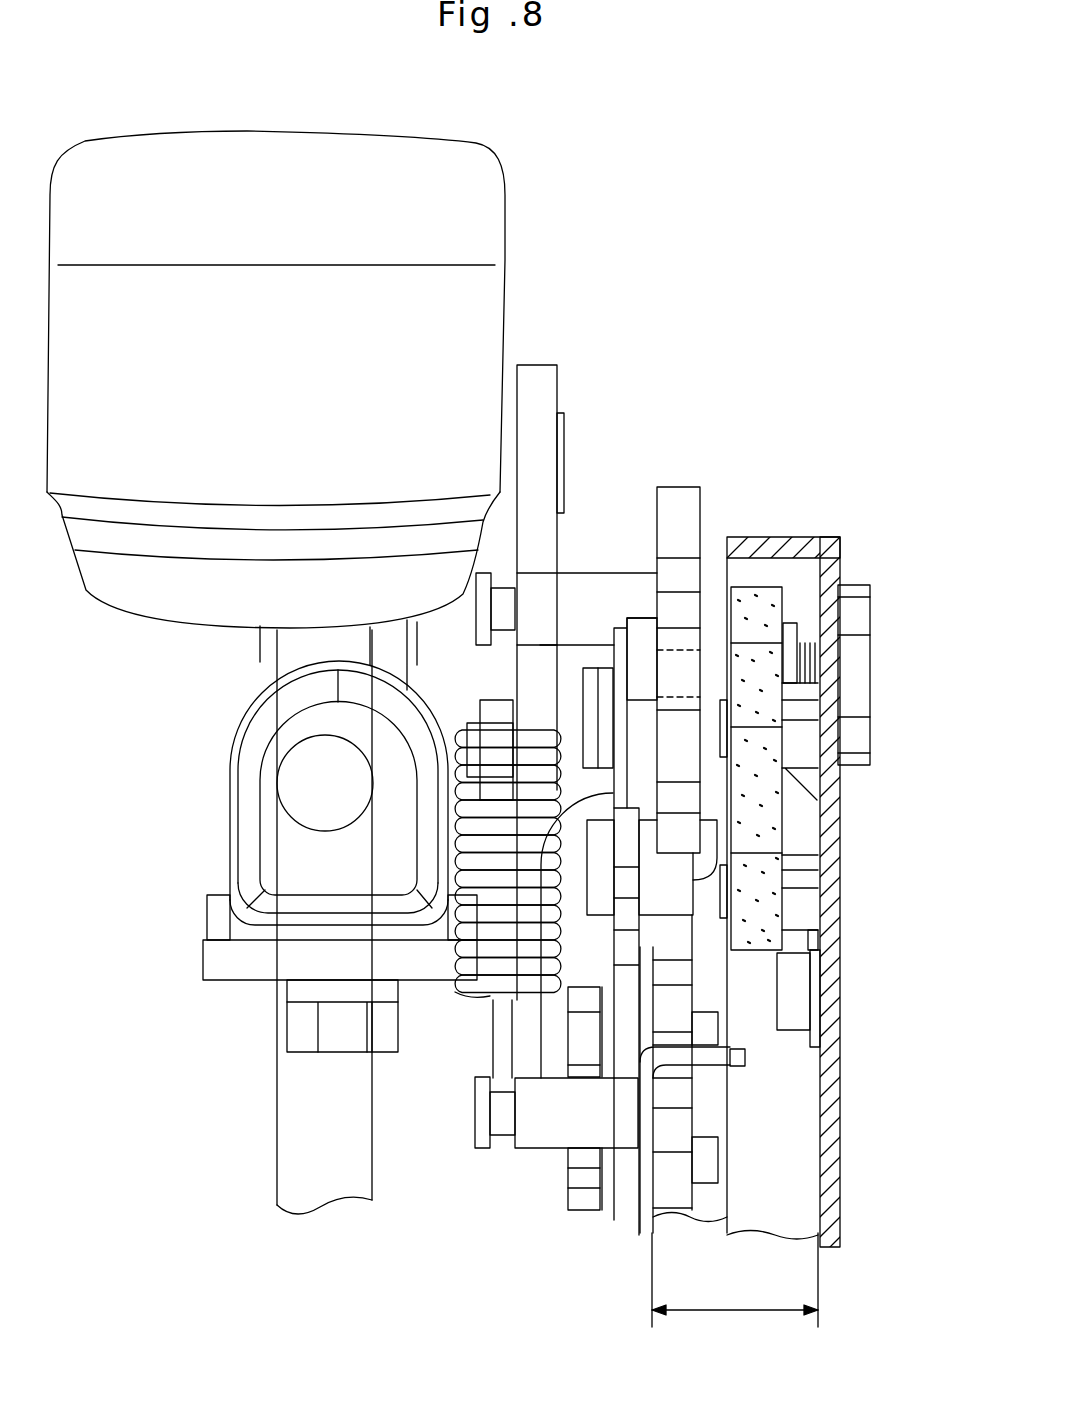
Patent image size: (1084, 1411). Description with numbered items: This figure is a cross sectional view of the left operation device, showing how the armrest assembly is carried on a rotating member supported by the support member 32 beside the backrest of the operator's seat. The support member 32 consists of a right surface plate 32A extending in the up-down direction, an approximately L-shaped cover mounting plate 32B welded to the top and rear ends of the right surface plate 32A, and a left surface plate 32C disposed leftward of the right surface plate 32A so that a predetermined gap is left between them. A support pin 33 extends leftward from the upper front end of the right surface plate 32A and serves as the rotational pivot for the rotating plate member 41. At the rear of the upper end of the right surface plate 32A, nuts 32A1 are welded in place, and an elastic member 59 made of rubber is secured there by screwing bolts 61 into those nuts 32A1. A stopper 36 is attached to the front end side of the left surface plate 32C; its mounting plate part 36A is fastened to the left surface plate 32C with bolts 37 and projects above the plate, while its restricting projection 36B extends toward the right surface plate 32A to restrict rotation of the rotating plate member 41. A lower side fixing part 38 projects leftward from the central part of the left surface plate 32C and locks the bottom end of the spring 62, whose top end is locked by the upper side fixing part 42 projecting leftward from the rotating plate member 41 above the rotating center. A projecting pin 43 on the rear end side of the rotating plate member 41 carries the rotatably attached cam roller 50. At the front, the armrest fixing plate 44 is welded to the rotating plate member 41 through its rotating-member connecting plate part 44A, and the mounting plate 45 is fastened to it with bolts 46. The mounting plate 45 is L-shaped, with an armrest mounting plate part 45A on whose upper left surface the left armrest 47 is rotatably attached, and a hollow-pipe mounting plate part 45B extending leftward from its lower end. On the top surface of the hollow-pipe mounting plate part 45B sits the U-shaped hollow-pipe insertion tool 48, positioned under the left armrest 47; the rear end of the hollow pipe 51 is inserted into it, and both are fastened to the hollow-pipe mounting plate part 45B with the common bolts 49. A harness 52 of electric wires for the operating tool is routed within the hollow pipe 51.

The left armrest 47 is at (280, 232).
The hollow pipe 51 is at (302, 653).
The hollow-pipe insertion tool 48 is at (230, 772).
The hollow-pipe mounting plate part 45B is at (232, 962).
The bolts 49 is at (343, 1027).
The harness 52 is at (277, 1138).
The bolts 46 is at (473, 757).
The spring 62 is at (457, 992).
The mounting plate 45 is at (533, 483).
The armrest mounting plate part 45A is at (533, 431).
The upper side fixing part 42 is at (478, 606).
The lower side fixing part 38 is at (483, 1113).
The armrest fixing plate 44 is at (567, 683).
The rotating-member connecting plate part 44A is at (708, 833).
The support pin 33 is at (592, 693).
The rotating plate member 41 is at (677, 518).
The bolts 37 is at (585, 1058).
The restricting projection 36B is at (670, 880).
The stopper 36 is at (556, 1025).
The mounting plate part 36A is at (623, 1172).
The left surface plate 32C is at (643, 1172).
The support member 32 is at (828, 1053).
The right surface plate 32A is at (833, 1130).
The cover mounting plate 32B is at (771, 548).
The projecting pin 43 is at (738, 672).
The elastic member 59 is at (753, 620).
The cam roller 50 is at (787, 635).
The nuts 32A1 is at (800, 701).
The bolts 61 is at (785, 730).